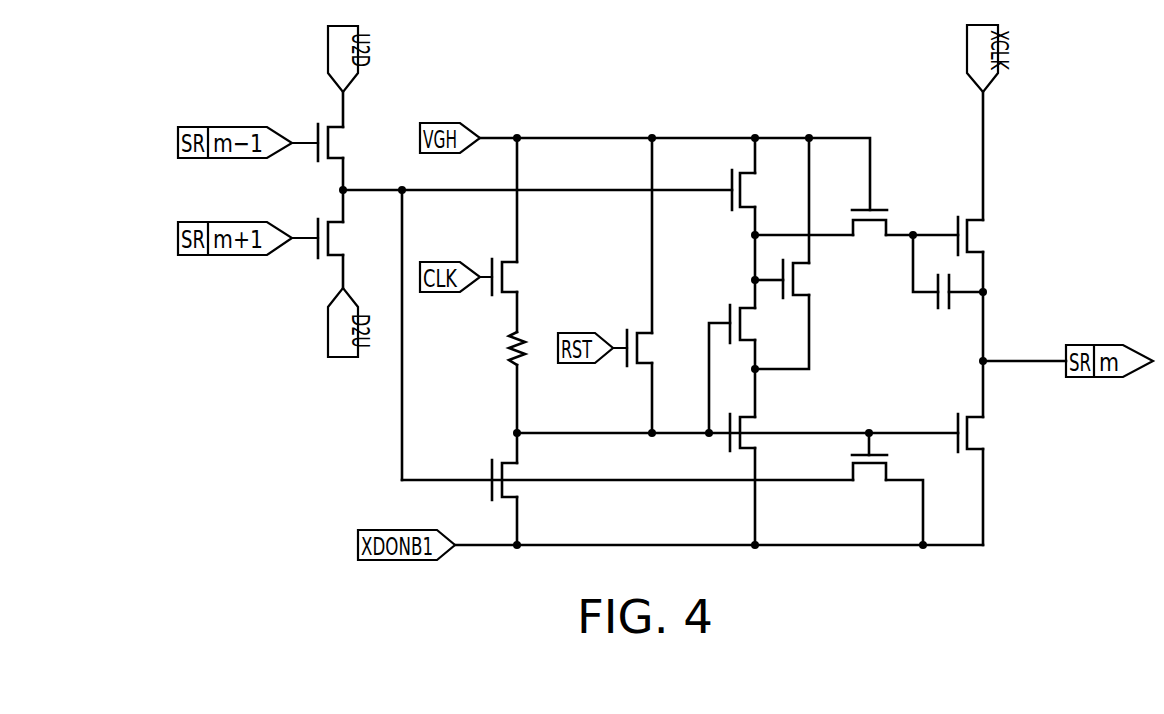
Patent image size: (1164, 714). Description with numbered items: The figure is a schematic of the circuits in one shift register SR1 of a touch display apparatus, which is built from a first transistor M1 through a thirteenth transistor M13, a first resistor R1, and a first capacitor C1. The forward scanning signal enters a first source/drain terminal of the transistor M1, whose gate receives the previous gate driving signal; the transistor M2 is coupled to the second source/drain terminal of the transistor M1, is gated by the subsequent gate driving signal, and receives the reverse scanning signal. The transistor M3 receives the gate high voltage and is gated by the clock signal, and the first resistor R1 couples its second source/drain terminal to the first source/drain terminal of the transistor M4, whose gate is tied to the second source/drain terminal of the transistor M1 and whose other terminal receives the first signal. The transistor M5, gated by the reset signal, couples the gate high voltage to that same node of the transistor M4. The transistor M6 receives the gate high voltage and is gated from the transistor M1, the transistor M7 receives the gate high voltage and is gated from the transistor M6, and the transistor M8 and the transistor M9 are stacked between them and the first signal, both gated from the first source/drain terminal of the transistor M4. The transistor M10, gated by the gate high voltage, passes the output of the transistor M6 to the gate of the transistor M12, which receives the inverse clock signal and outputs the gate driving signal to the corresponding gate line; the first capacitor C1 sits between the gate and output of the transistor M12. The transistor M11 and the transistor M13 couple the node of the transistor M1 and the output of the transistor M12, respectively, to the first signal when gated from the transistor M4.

The first transistor M1 is at (346, 141).
The second transistor M2 is at (347, 238).
The third transistor M3 is at (520, 278).
The fourth transistor M4 is at (523, 472).
The fifth transistor M5 is at (652, 350).
The sixth transistor M6 is at (759, 190).
The seventh transistor M7 is at (811, 280).
The eighth transistor M8 is at (758, 325).
The ninth transistor M9 is at (762, 424).
The tenth transistor M10 is at (871, 241).
The eleventh transistor M11 is at (869, 485).
The twelfth transistor M12 is at (995, 238).
The thirteenth transistor M13 is at (995, 432).
The first resistor R1 is at (497, 351).
The first capacitor C1 is at (943, 310).
The shift register SR1 is at (1108, 562).